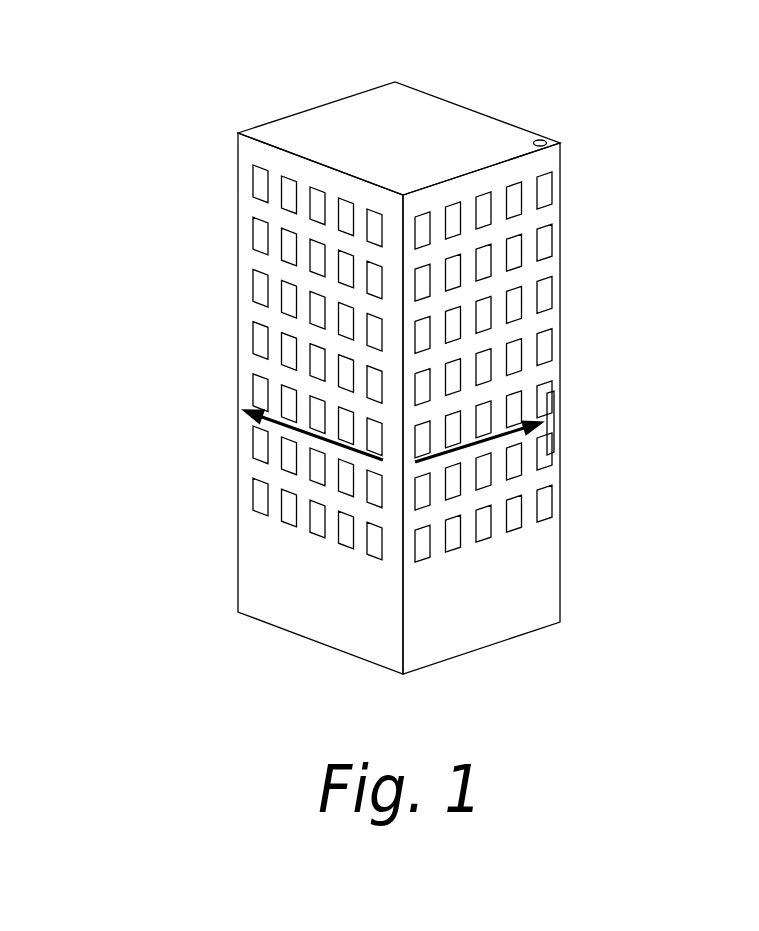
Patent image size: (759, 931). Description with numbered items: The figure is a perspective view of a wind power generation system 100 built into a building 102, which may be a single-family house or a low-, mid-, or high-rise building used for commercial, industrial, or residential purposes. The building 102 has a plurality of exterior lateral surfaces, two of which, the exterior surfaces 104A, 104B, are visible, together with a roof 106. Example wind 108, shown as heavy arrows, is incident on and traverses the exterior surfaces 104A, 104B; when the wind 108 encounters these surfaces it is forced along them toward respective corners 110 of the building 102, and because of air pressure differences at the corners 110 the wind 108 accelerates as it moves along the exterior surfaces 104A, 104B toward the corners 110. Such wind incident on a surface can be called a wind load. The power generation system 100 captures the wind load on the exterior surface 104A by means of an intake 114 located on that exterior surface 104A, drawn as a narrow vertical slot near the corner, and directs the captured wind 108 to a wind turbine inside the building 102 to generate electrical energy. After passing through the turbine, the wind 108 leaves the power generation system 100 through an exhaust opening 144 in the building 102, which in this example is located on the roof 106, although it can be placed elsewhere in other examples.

The wind power generation system 100 is at (446, 363).
The building 102 is at (400, 363).
The exterior lateral surface 104A is at (547, 562).
The exterior lateral surface 104B is at (250, 550).
The roof 106 is at (305, 128).
The wind 108 is at (277, 423).
The corners 110 is at (562, 350).
The intake 114 is at (550, 420).
The exhaust opening 144 is at (543, 142).